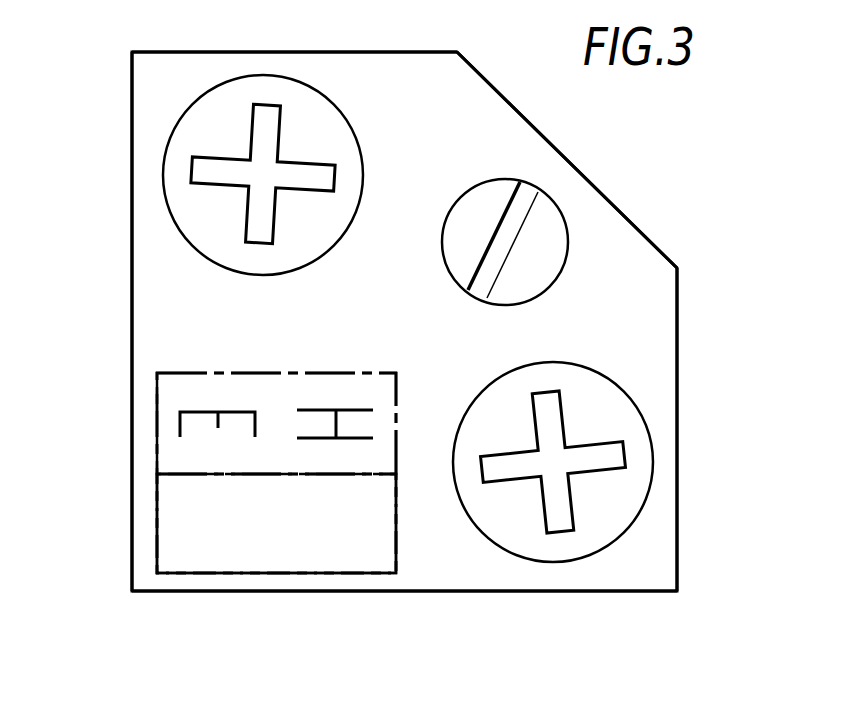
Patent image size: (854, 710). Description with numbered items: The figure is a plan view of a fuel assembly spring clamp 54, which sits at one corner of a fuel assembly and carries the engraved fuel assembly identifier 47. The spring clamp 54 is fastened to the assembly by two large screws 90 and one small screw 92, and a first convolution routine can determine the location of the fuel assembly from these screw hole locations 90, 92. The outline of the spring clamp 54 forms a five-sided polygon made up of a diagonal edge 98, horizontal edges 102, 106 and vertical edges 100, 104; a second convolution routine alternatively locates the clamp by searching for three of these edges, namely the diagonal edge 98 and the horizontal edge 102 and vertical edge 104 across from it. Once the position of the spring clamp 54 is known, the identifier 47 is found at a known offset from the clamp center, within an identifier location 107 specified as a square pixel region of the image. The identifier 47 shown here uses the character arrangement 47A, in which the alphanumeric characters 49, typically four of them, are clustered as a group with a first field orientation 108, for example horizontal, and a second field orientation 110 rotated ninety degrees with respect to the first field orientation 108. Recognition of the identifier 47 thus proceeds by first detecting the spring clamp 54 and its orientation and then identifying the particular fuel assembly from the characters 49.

The fuel assembly spring clamp 54 is at (682, 523).
The vertical edge 100 is at (677, 378).
The horizontal edge 102 is at (515, 592).
The vertical edge 104 is at (132, 132).
The horizontal edge 106 is at (263, 52).
The diagonal edge 98 is at (629, 221).
The large screws 90 is at (344, 112).
The small screw 92 is at (462, 197).
The character arrangement 47A is at (298, 352).
The first field orientation 108 is at (163, 402).
The second field orientation 110 is at (163, 512).
The fuel assembly identifier 47 is at (148, 554).
The identifier location 107 is at (378, 560).
The alphanumeric characters 49 is at (347, 438).